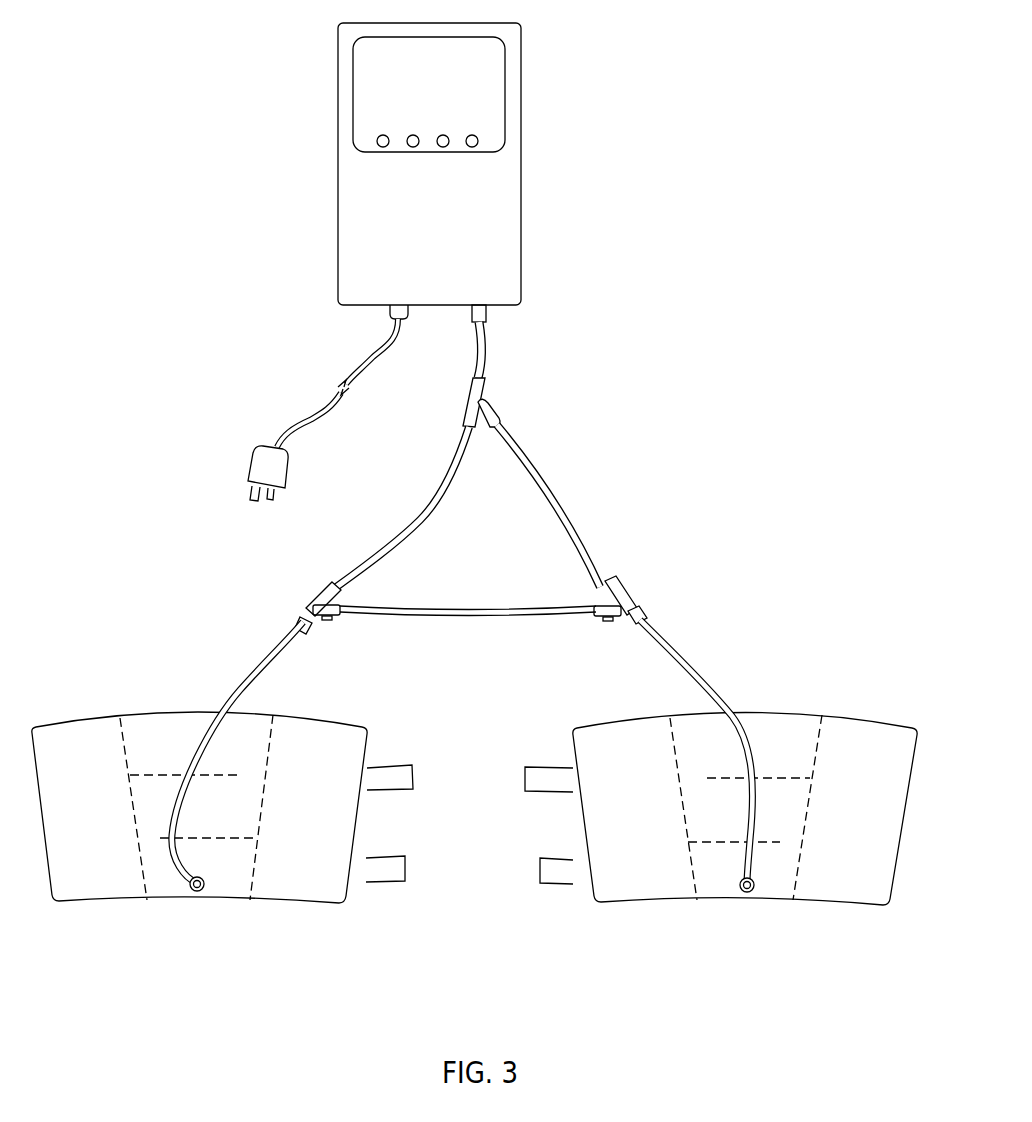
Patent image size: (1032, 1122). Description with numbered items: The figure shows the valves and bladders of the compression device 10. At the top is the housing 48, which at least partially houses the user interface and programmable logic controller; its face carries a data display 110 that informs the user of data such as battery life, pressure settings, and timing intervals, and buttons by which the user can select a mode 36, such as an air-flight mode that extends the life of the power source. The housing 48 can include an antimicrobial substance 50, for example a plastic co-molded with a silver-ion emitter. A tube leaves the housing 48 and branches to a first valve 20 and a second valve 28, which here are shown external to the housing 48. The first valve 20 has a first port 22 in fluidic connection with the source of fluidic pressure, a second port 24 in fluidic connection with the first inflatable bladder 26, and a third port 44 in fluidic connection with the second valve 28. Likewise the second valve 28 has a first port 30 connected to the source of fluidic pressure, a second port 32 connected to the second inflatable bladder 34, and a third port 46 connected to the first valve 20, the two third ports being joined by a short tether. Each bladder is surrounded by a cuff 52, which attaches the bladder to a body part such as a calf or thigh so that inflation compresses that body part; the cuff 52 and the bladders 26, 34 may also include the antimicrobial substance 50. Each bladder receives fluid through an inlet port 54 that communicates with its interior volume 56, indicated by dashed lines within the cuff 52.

The compression device 10 is at (136, 26).
The first valve 20 is at (318, 598).
The first port 22 is at (335, 585).
The second port 24 is at (294, 632).
The first inflatable bladder 26 is at (160, 866).
The second valve 28 is at (623, 600).
The first port 30 is at (603, 582).
The second port 32 is at (642, 617).
The second inflatable bladder 34 is at (783, 873).
The mode 36 is at (370, 142).
The third port 44 is at (346, 614).
The third port 46 is at (588, 612).
The housing 48 is at (336, 267).
The antimicrobial substance 50 is at (336, 170).
The cuff 52 is at (97, 715).
The inlet port 54 is at (205, 891).
The interior volume 56 is at (185, 720).
The data display 110 is at (362, 75).